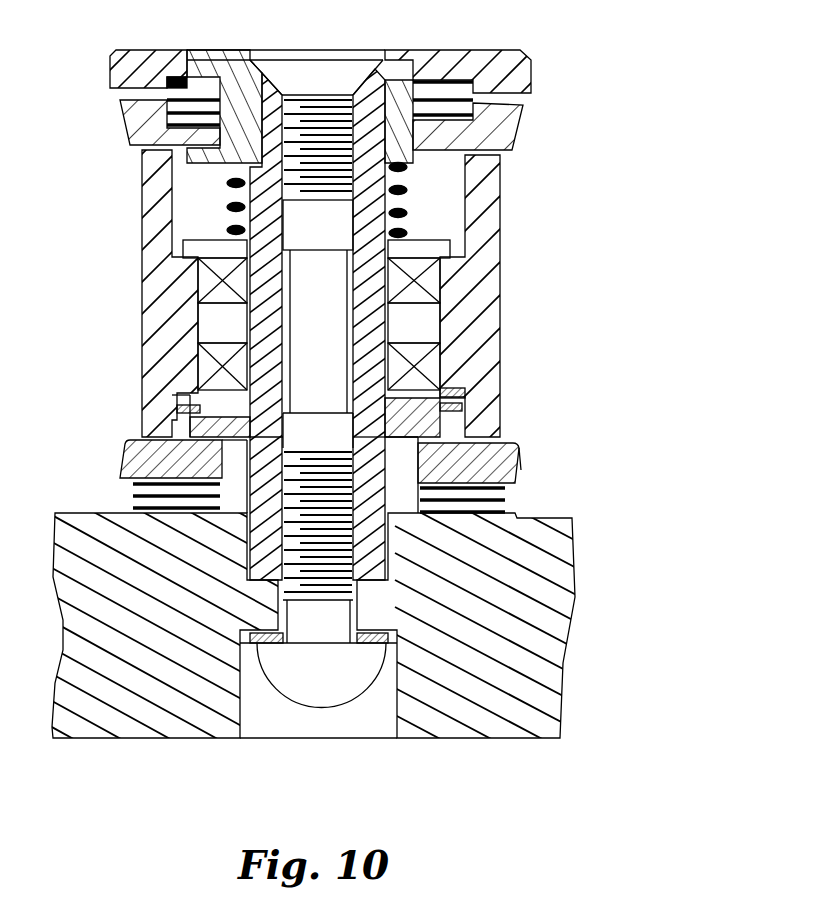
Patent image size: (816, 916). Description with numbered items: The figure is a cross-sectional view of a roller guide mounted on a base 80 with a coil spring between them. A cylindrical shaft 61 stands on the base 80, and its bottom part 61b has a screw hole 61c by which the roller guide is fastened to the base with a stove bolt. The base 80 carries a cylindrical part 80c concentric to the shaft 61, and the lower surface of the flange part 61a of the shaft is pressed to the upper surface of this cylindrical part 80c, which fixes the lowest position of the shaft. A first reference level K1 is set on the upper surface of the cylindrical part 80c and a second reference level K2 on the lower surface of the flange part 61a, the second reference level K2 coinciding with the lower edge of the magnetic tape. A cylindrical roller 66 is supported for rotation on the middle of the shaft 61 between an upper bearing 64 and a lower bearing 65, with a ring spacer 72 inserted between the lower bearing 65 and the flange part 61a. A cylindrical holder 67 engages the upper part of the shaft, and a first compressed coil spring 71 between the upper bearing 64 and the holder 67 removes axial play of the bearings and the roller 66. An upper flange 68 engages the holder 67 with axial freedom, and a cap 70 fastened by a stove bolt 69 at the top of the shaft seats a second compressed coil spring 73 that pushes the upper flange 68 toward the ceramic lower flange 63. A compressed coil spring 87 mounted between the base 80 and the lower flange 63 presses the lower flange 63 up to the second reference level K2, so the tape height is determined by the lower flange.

The cylindrical shaft 61 is at (378, 325).
The flange part 61a is at (415, 425).
The bottom part 61b is at (517, 478).
The screw hole 61c is at (322, 448).
The lower flange 63 is at (510, 460).
The upper bearing 64 is at (430, 280).
The lower bearing 65 is at (440, 405).
The cylindrical roller 66 is at (152, 297).
The cylindrical holder 67 is at (232, 95).
The upper flange 68 is at (135, 122).
The stove bolt 69 is at (350, 62).
The cap 70 is at (470, 63).
The first compressed coil spring 71 is at (412, 210).
The ring spacer 72 is at (440, 372).
The second compressed coil spring 73 is at (188, 92).
The base 80 is at (492, 728).
The cylindrical part 80c is at (237, 493).
The compressed coil spring 87 is at (505, 510).
The first reference level K1 is at (207, 420).
The second reference level K2 is at (223, 458).